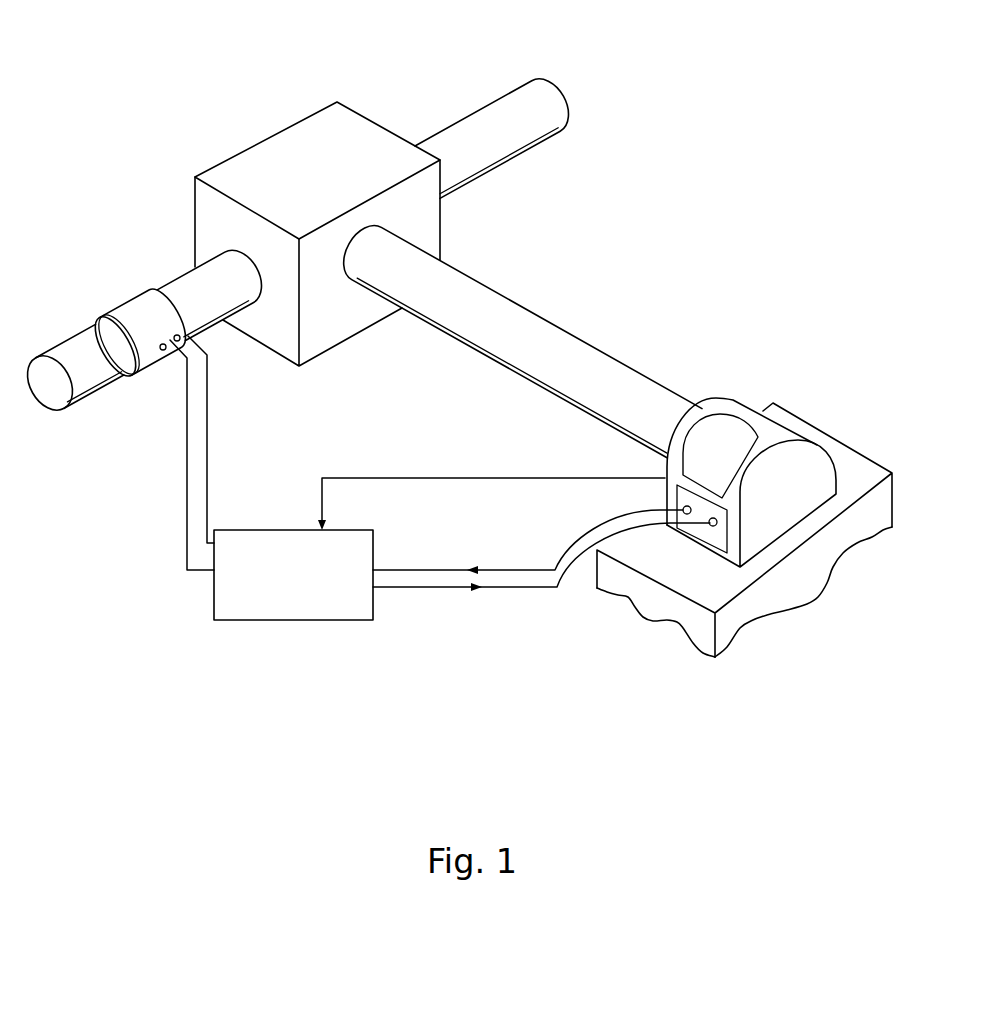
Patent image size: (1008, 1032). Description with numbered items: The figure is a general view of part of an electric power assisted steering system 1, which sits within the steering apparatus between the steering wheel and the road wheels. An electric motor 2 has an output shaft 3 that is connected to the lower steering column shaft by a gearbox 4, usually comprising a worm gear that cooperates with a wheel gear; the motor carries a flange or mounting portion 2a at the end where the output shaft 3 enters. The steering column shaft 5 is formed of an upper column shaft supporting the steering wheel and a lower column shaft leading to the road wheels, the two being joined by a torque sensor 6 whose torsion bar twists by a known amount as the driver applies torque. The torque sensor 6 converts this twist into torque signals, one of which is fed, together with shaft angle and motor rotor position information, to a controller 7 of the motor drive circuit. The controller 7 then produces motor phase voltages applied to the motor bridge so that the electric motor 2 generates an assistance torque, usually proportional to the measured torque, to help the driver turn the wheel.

The electric power assisted steering system 1 is at (680, 214).
The electric motor 2 is at (808, 465).
The motor flange 2a is at (723, 417).
The output shaft 3 is at (478, 298).
The gearbox 4 is at (315, 184).
The shaft 5 is at (446, 102).
The torque sensor 6 is at (145, 305).
The controller 7 is at (284, 589).